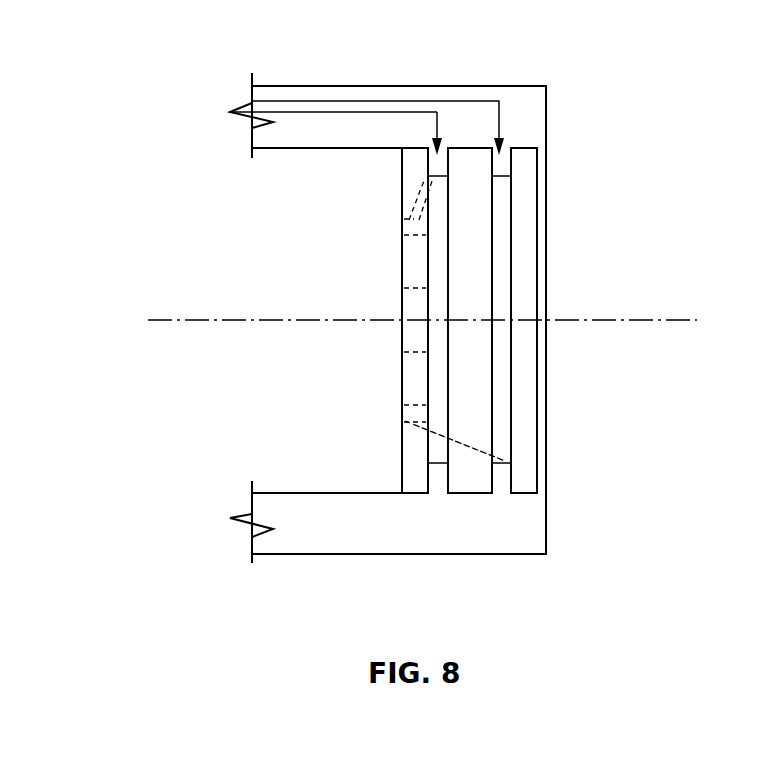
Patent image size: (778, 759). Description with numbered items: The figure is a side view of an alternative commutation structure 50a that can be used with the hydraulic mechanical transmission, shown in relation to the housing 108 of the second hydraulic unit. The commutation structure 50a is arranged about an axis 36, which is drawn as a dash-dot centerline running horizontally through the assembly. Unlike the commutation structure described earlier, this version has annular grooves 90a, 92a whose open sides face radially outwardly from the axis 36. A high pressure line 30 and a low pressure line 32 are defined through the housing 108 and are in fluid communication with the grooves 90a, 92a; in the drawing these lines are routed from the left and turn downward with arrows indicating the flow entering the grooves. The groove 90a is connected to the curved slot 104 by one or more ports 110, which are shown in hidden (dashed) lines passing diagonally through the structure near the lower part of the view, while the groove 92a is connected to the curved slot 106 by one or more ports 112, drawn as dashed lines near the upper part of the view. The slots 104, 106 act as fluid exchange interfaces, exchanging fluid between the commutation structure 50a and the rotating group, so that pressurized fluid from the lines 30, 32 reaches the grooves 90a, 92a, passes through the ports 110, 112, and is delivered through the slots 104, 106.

The commutation structure 50a is at (146, 45).
The high pressure line 30 is at (502, 117).
The low pressure line 32 is at (295, 112).
The axis 36 is at (647, 320).
The annular groove 90a is at (497, 165).
The annular groove 92a is at (442, 163).
The curved slot 104 is at (402, 365).
The curved slot 106 is at (402, 262).
The housing 108 is at (395, 555).
The port 110 is at (470, 445).
The port 112 is at (420, 197).